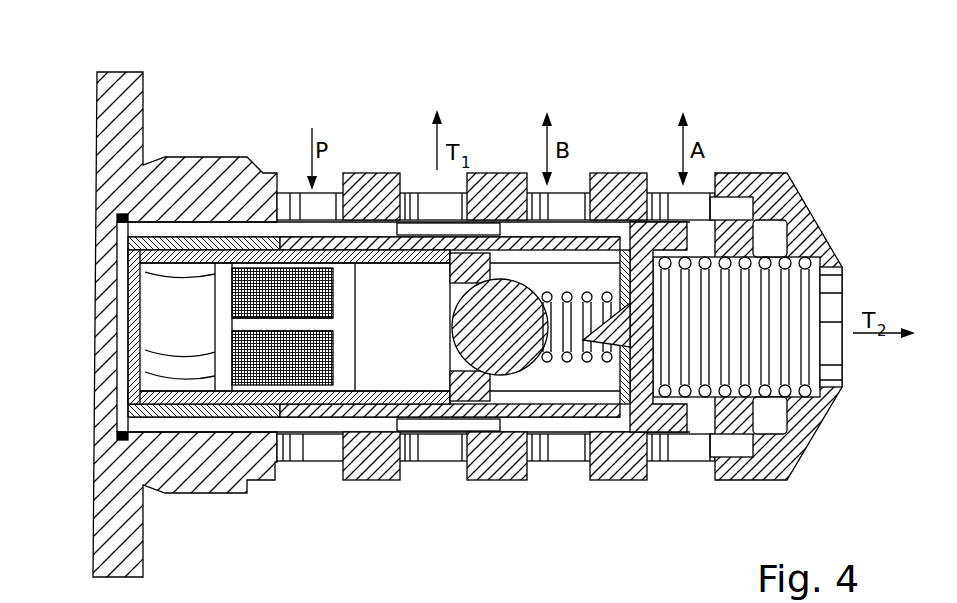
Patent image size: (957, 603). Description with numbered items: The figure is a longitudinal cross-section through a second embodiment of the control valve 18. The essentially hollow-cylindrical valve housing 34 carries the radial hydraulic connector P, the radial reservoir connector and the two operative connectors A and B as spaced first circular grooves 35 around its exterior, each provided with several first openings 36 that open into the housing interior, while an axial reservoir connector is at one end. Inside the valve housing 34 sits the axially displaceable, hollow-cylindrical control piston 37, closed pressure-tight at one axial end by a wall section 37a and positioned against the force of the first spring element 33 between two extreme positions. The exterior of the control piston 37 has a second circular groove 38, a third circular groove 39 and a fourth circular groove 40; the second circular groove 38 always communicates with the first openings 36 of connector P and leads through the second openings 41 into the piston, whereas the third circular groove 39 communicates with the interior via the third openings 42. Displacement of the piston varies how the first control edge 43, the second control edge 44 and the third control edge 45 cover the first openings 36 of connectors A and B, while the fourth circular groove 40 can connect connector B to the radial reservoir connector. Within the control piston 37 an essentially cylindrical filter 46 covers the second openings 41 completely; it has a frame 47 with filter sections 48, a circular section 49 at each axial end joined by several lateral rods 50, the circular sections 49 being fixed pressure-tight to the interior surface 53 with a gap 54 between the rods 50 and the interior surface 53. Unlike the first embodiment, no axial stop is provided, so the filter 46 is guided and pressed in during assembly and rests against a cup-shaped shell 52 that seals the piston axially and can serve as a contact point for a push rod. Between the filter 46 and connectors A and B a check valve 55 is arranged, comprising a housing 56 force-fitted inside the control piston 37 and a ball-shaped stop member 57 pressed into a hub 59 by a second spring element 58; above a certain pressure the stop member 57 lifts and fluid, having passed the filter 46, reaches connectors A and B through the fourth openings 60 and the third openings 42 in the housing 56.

The control valve 18 is at (132, 62).
The first spring element 33 is at (803, 258).
The valve housing 34 is at (780, 192).
The first circular grooves 35 is at (403, 175).
The first openings 36 is at (398, 462).
The control piston 37 is at (200, 215).
The wall section 37a is at (698, 397).
The second circular groove 38 is at (237, 215).
The third circular groove 39 is at (573, 222).
The fourth circular groove 40 is at (480, 222).
The second openings 41 is at (290, 405).
The third openings 42 is at (571, 447).
The first control edge 43 is at (313, 206).
The second control edge 44 is at (718, 232).
The third control edge 45 is at (620, 445).
The filter 46 is at (200, 332).
The frame 47 is at (225, 372).
The filter section 48 is at (228, 290).
The circular section 49 is at (225, 383).
The lateral rods 50 is at (263, 325).
The cup-shaped shell 52 is at (138, 302).
The interior surface 53 is at (384, 263).
The gap 54 is at (263, 222).
The check valve 55 is at (512, 432).
The housing 56 is at (465, 442).
The stop member 57 is at (478, 318).
The second spring element 58 is at (521, 462).
The hub 59 is at (445, 358).
The fourth openings 60 is at (597, 262).